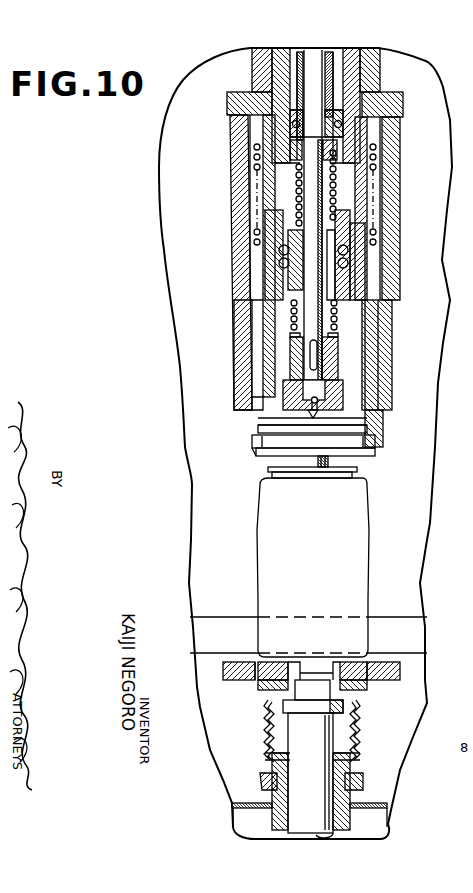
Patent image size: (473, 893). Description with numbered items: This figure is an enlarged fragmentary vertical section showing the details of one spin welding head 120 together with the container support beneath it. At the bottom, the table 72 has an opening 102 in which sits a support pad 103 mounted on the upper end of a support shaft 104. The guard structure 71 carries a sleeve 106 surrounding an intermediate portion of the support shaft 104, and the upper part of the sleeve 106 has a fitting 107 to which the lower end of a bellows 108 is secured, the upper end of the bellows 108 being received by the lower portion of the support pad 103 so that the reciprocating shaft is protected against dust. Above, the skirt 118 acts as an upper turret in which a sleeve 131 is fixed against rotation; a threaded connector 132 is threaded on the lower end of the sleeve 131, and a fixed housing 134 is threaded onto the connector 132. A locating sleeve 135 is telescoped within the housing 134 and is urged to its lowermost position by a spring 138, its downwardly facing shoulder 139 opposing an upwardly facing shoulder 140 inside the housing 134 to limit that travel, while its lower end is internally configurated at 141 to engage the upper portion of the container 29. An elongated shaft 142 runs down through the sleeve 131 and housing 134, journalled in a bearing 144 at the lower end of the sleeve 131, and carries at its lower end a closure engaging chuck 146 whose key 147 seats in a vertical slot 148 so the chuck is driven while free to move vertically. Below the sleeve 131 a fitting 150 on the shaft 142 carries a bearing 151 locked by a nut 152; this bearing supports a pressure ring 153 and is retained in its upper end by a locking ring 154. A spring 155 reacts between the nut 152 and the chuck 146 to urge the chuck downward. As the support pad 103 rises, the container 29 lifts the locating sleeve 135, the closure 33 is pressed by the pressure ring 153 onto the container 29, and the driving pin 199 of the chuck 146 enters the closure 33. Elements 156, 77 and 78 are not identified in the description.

The skirt 118 is at (380, 57).
The sleeve 131 is at (363, 77).
The connector 132 is at (238, 96).
The bearing 144 is at (320, 113).
The fixed housing 134 is at (238, 184).
The upwardly facing shoulder 140 is at (246, 274).
The spin welding head 120 is at (400, 222).
The closure engaging chuck 146 is at (378, 348).
The driving pin 199 is at (378, 423).
The spring 138 is at (254, 230).
The elongated shaft 142 is at (333, 197).
The spring 155 is at (296, 177).
The locking ring 154 is at (280, 213).
The fitting 150 is at (280, 242).
The downwardly facing shoulder 139 is at (248, 258).
The bearing 151 is at (350, 262).
The nut 152 is at (347, 287).
The sleeve 156 is at (340, 312).
The pressure ring 153 is at (272, 342).
The vertical slot 148 is at (313, 372).
The key 147 is at (248, 395).
The locating sleeve 135 is at (255, 425).
The internal configuration 141 is at (257, 455).
The stem 77 is at (330, 459).
The closure 33 is at (268, 471).
The container 29 is at (370, 527).
The housing 78 is at (212, 623).
The table 72 is at (383, 683).
The opening 102 is at (258, 685).
The support pad 103 is at (357, 685).
The support shaft 104 is at (298, 730).
The bellows 108 is at (360, 733).
The fitting 107 is at (363, 773).
The sleeve 106 is at (272, 795).
The guard structure 71 is at (372, 803).